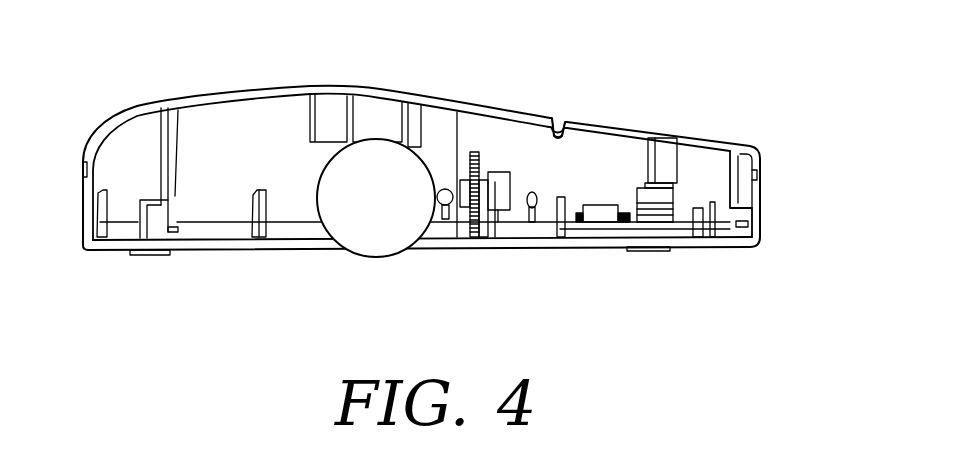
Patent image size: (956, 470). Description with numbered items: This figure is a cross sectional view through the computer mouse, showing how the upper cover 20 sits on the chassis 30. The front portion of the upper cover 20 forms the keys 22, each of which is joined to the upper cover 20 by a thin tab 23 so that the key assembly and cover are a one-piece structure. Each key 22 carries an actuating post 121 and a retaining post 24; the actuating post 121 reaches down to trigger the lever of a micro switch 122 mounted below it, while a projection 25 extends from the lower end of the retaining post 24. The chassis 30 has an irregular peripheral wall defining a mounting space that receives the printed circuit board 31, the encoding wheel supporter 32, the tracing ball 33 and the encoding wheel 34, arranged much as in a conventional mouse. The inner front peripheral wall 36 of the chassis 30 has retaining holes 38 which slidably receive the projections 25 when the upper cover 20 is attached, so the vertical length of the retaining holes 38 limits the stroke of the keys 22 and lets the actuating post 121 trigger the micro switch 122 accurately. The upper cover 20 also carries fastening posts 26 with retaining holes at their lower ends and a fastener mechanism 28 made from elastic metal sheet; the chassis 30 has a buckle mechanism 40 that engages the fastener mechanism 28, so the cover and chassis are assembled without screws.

The upper cover 20 is at (322, 66).
The key 22 is at (610, 123).
The tab 23 is at (563, 127).
The retaining post 24 is at (733, 178).
The projection 25 is at (753, 202).
The fastening post 26 is at (443, 113).
The fastener mechanism 28 is at (178, 110).
The chassis 30 is at (588, 262).
The printed circuit board 31 is at (538, 238).
The encoding wheel supporter 32 is at (448, 203).
The tracing ball 33 is at (378, 150).
The encoding wheel 34 is at (477, 148).
The inner front peripheral wall 36 is at (741, 228).
The retaining hole 38 is at (753, 218).
The buckle mechanism 40 is at (144, 215).
The actuating post 121 is at (655, 138).
The micro switch 122 is at (663, 210).